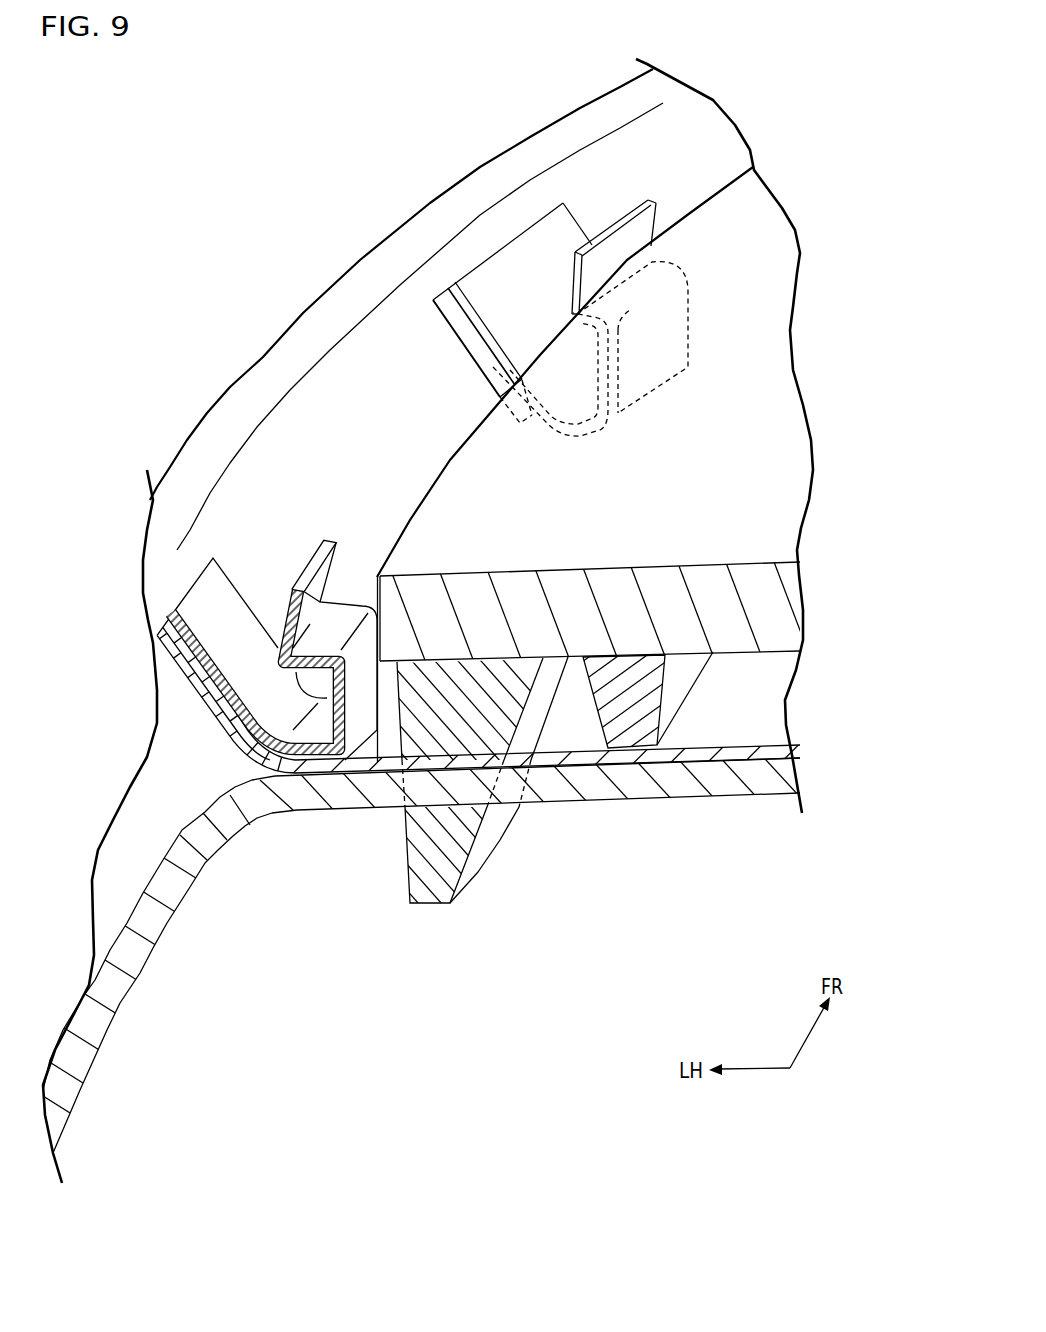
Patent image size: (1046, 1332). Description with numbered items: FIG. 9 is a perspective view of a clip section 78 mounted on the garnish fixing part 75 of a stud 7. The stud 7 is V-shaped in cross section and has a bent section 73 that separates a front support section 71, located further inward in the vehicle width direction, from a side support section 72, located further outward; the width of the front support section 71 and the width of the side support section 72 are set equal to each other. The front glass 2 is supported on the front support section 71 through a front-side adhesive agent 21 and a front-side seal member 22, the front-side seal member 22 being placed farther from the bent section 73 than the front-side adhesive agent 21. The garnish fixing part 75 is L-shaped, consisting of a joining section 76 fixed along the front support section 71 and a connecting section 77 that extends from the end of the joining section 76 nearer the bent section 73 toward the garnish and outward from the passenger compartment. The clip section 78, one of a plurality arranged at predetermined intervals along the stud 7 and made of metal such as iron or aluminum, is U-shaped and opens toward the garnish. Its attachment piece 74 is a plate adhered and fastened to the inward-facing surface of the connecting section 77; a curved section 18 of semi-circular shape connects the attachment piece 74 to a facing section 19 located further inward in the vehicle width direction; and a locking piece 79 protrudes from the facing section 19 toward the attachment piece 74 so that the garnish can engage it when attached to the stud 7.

The front glass 2 is at (757, 612).
The stud 7 is at (452, 957).
The curved section 18 is at (580, 427).
The facing section 19 is at (653, 333).
The front-side adhesive agent 21 is at (502, 717).
The front-side seal member 22 is at (635, 733).
The front support section 71 is at (350, 803).
The side support section 72 is at (98, 1043).
The bent section 73 is at (233, 817).
The attachment piece 74 is at (497, 302).
The garnish fixing part 75 is at (197, 718).
The joining section 76 is at (702, 757).
The connecting section 77 is at (277, 453).
The clip section 78 is at (447, 333).
The locking piece 79 is at (575, 268).